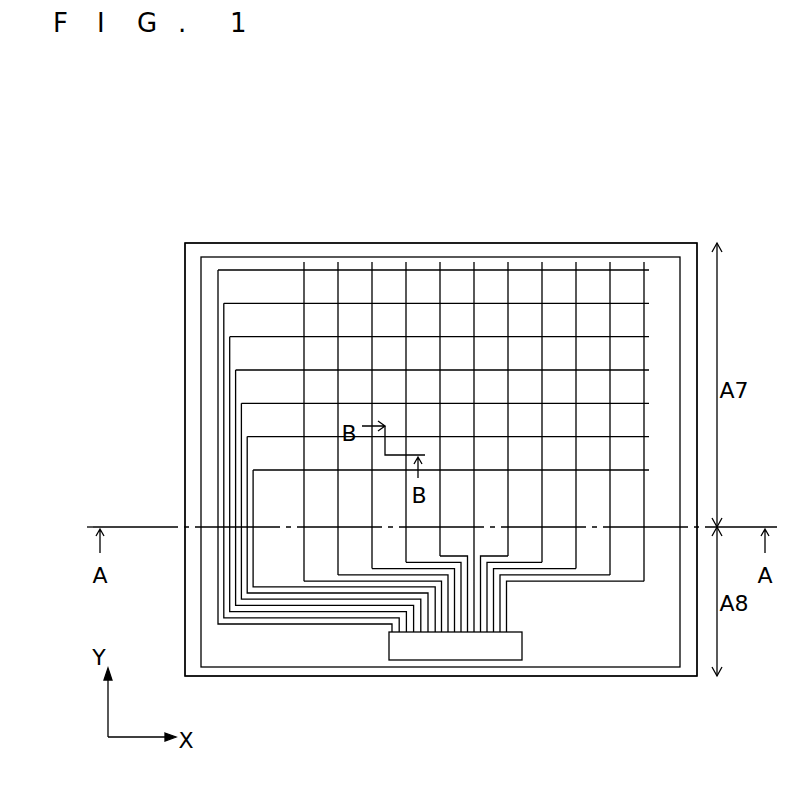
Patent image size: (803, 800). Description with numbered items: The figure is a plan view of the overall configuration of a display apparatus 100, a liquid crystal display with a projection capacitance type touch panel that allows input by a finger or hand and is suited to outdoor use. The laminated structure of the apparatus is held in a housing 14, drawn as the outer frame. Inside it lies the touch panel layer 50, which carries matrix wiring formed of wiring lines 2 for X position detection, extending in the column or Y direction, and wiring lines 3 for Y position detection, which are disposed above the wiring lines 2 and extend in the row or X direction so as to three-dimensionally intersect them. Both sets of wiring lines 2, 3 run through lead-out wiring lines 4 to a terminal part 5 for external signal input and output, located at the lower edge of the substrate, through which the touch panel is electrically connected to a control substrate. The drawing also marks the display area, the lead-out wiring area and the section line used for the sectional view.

The display apparatus 100 is at (670, 197).
The housing 14 is at (222, 243).
The touch panel layer 50 is at (557, 256).
The wiring lines for X position detection 2 is at (302, 286).
The wiring lines for Y position detection 3 is at (493, 269).
The lead-out wiring lines 4 is at (507, 608).
The terminal part 5 is at (523, 644).